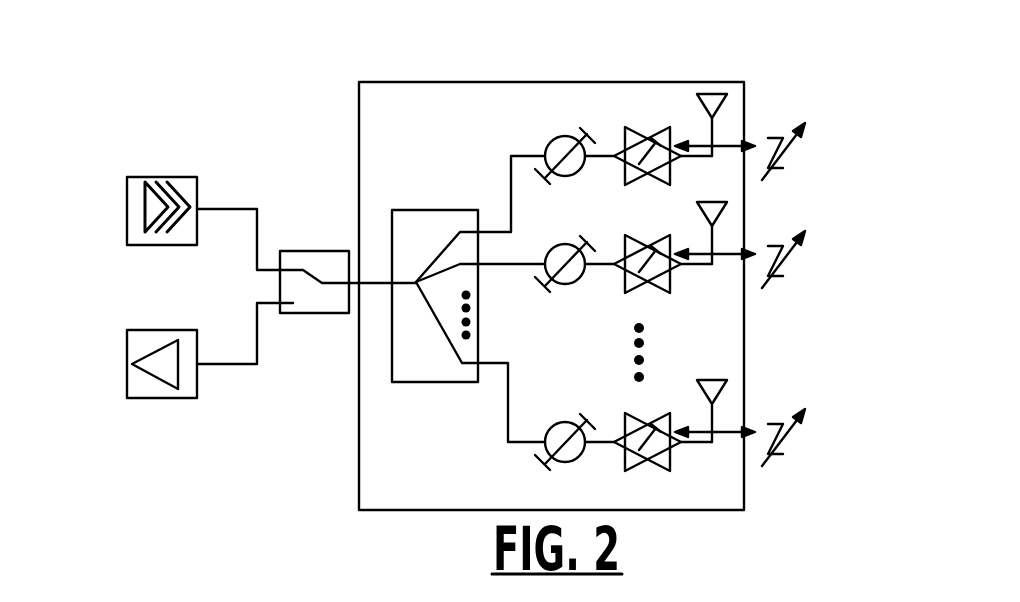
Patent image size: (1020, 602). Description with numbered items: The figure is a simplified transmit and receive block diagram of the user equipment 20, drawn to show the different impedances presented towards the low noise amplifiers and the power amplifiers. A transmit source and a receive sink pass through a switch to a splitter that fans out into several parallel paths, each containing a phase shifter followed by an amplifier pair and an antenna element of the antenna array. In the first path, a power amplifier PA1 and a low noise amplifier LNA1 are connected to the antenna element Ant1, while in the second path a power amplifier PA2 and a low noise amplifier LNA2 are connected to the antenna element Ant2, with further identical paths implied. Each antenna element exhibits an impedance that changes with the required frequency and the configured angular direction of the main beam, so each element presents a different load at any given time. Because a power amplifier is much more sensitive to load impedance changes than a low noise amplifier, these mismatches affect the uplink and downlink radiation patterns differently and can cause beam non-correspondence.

The user equipment 20 is at (814, 82).
The power amplifier PA1 is at (653, 138).
The low noise amplifier LNA1 is at (673, 162).
The antenna element Ant1 is at (756, 139).
The power amplifier PA2 is at (653, 247).
The low noise amplifier LNA2 is at (673, 276).
The antenna element Ant2 is at (756, 248).